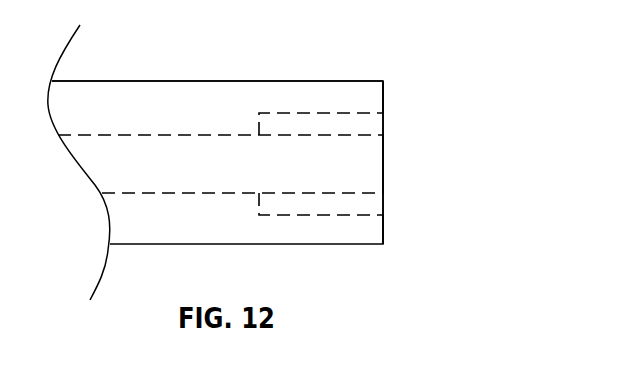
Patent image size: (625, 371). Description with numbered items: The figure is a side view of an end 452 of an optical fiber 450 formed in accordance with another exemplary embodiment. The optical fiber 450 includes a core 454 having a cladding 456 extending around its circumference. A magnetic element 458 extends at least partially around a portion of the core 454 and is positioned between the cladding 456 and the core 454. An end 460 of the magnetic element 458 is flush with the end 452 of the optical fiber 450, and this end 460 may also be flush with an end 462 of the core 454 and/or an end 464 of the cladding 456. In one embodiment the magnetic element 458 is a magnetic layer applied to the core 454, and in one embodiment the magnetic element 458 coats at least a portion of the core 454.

The optical fiber 450 is at (401, 32).
The end of the optical fiber 452 is at (401, 162).
The core 454 is at (98, 133).
The cladding 456 is at (200, 96).
The magnetic element 458 is at (313, 112).
The end of the magnetic element 460 is at (387, 207).
The end of the core 462 is at (392, 186).
The end of the cladding 464 is at (388, 102).